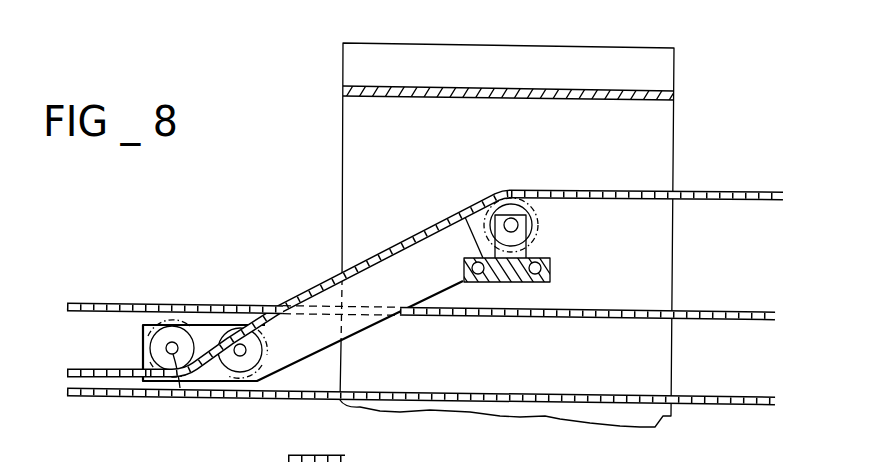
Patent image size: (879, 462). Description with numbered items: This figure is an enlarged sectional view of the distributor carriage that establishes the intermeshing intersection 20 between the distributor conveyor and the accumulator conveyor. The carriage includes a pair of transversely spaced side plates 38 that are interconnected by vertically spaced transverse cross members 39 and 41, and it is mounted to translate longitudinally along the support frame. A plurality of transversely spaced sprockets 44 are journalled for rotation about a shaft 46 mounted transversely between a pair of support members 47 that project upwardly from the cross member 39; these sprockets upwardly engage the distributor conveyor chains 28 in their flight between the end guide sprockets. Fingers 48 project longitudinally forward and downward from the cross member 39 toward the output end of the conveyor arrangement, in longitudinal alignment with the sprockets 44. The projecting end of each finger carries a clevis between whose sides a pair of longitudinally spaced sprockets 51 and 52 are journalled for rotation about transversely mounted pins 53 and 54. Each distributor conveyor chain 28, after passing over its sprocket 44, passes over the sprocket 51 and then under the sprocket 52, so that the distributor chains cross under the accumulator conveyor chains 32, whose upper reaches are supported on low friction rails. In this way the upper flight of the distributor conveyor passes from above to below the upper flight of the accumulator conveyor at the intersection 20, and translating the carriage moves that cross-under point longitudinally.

The intermeshing intersection 20 is at (268, 305).
The distributor conveyor chains 28 is at (711, 193).
The accumulator conveyor chains 32 is at (712, 310).
The side plates 38 is at (659, 143).
The cross member 39 is at (480, 276).
The cross member 41 is at (446, 88).
The sprockets 44 is at (536, 209).
The shaft 46 is at (514, 220).
The support members 47 is at (497, 213).
The fingers 48 is at (313, 345).
The sprocket 51 is at (248, 338).
The sprocket 52 is at (187, 332).
The pin 53 is at (240, 356).
The pin 54 is at (170, 354).